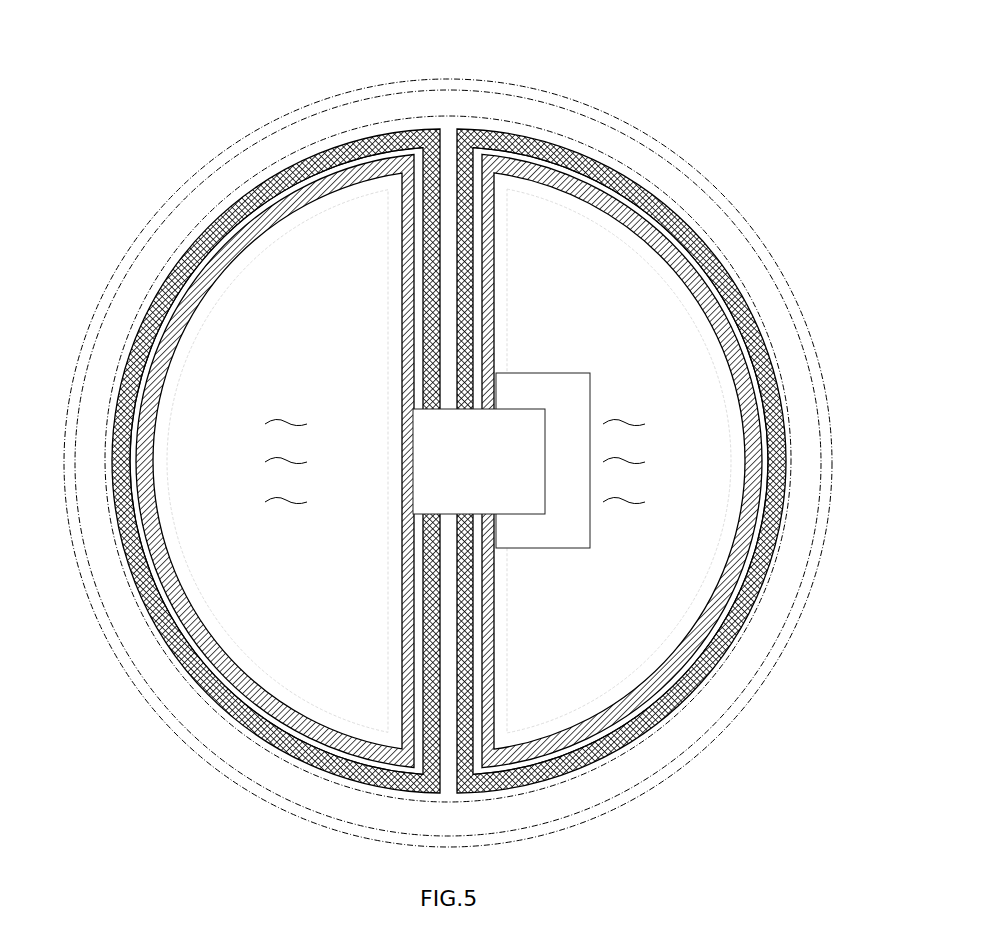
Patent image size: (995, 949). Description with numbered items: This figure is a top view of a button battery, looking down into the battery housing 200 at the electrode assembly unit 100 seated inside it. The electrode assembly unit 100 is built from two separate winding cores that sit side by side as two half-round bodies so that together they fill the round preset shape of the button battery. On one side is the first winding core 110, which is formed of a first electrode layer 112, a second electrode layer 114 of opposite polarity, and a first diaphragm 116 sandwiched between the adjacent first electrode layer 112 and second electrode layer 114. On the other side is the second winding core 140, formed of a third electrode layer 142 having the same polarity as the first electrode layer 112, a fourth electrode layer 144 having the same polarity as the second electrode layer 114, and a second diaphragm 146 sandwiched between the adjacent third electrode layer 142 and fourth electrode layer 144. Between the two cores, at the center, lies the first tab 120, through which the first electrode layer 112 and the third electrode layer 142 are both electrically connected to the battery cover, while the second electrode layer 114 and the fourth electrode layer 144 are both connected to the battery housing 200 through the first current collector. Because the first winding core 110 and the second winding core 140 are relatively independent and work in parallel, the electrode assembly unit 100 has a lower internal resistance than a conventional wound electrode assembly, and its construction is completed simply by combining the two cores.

The electrode assembly unit 100 is at (449, 406).
The first winding core 110 is at (658, 447).
The first electrode layer 112 is at (602, 210).
The second electrode layer 114 is at (685, 237).
The first diaphragm 116 is at (722, 300).
The first tab 120 is at (496, 495).
The second winding core 140 is at (239, 454).
The third electrode layer 142 is at (278, 210).
The fourth electrode layer 144 is at (205, 238).
The second diaphragm 146 is at (162, 327).
The battery housing 200 is at (162, 708).